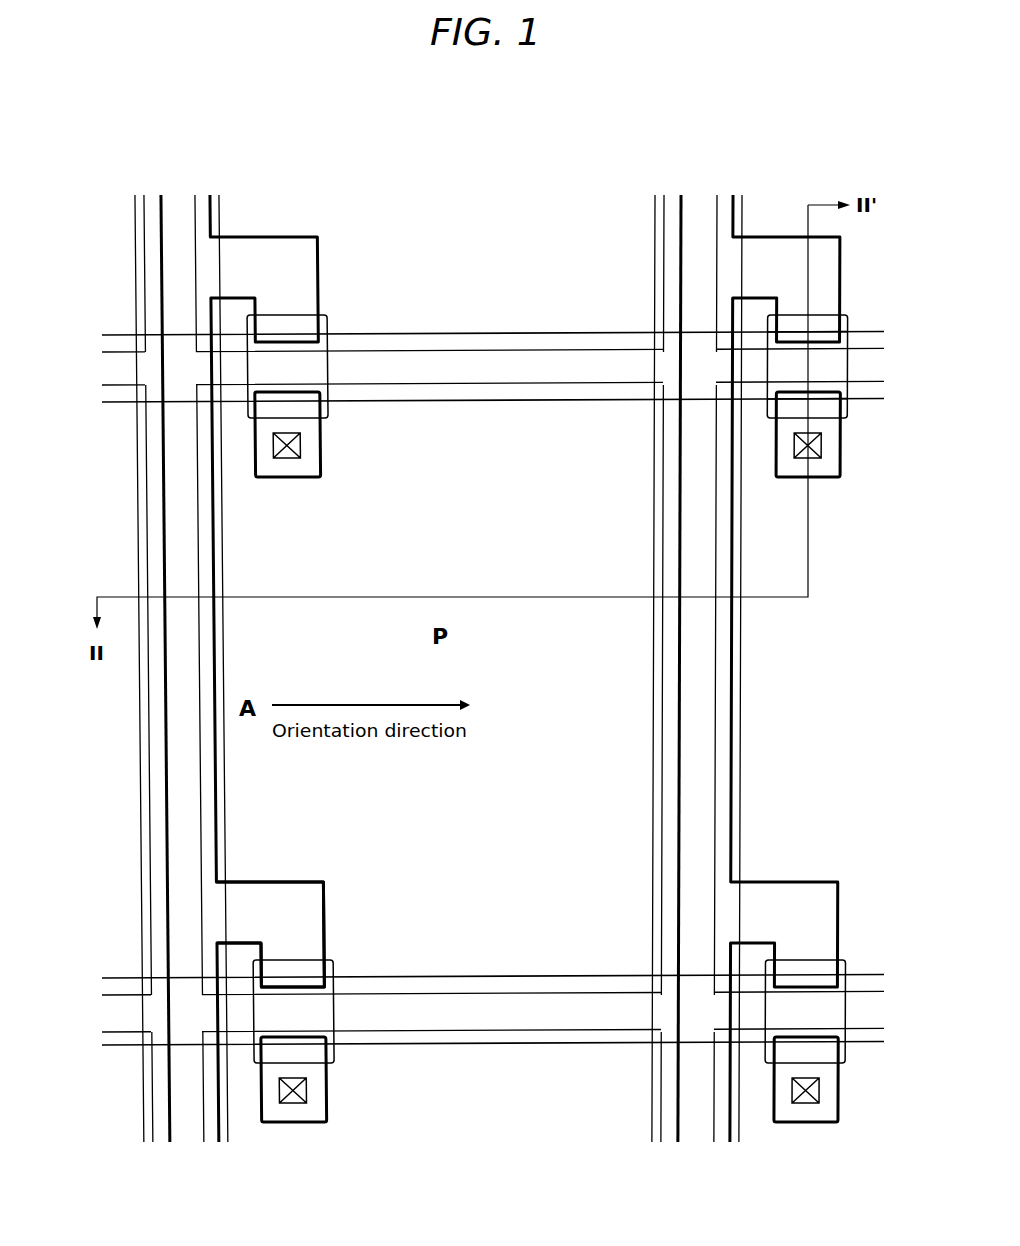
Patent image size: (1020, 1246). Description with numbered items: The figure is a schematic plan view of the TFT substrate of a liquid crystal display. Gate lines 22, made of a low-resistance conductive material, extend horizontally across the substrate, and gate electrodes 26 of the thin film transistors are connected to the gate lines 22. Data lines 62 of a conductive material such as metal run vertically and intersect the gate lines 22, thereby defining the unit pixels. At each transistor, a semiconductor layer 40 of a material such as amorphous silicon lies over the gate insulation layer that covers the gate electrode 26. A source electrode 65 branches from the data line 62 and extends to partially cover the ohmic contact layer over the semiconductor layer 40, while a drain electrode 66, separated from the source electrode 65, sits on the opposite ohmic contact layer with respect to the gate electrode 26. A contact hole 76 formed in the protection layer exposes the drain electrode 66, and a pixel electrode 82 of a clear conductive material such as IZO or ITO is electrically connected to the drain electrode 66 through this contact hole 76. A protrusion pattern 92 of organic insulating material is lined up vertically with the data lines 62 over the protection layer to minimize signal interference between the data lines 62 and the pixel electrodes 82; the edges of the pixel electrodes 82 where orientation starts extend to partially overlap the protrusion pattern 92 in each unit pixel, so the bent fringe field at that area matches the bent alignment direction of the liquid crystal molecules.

The gate line 22 is at (493, 688).
The gate electrode 26 is at (830, 365).
The semiconductor layer 40 is at (848, 416).
The data line 62 is at (678, 728).
The source electrode 65 is at (295, 881).
The drain electrode 66 is at (325, 1108).
The contact hole 76 is at (287, 463).
The pixel electrode 82 is at (200, 672).
The protrusion pattern 92 is at (655, 662).